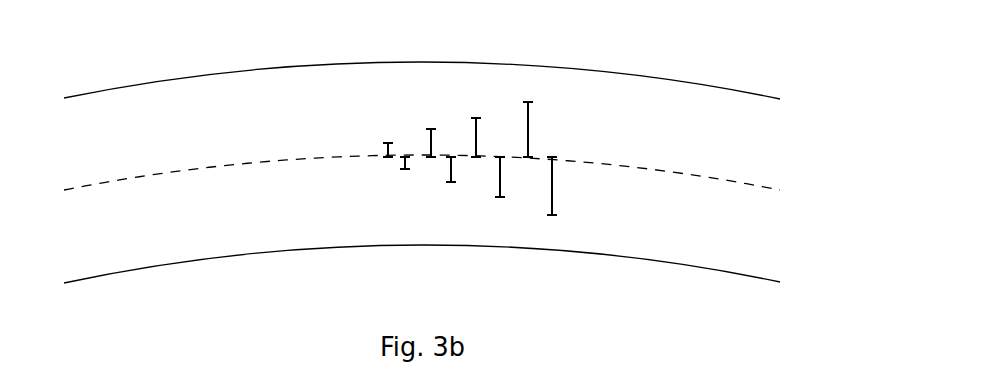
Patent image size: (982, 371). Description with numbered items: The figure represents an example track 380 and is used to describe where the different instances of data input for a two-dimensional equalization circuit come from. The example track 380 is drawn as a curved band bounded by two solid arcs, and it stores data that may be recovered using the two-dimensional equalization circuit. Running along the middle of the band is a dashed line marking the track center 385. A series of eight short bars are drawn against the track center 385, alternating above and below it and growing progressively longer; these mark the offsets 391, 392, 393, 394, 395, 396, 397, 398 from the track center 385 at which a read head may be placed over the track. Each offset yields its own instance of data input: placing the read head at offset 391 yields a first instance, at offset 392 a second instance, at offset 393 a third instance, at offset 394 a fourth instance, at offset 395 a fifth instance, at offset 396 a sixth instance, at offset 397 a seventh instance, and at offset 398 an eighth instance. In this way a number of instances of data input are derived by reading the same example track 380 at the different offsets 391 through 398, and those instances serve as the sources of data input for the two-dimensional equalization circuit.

The example track 380 is at (599, 49).
The track center 385 is at (196, 172).
The offset 391 is at (385, 150).
The offset 392 is at (403, 164).
The offset 393 is at (429, 138).
The offset 394 is at (449, 172).
The offset 395 is at (474, 129).
The offset 396 is at (498, 190).
The offset 397 is at (526, 117).
The offset 398 is at (550, 208).